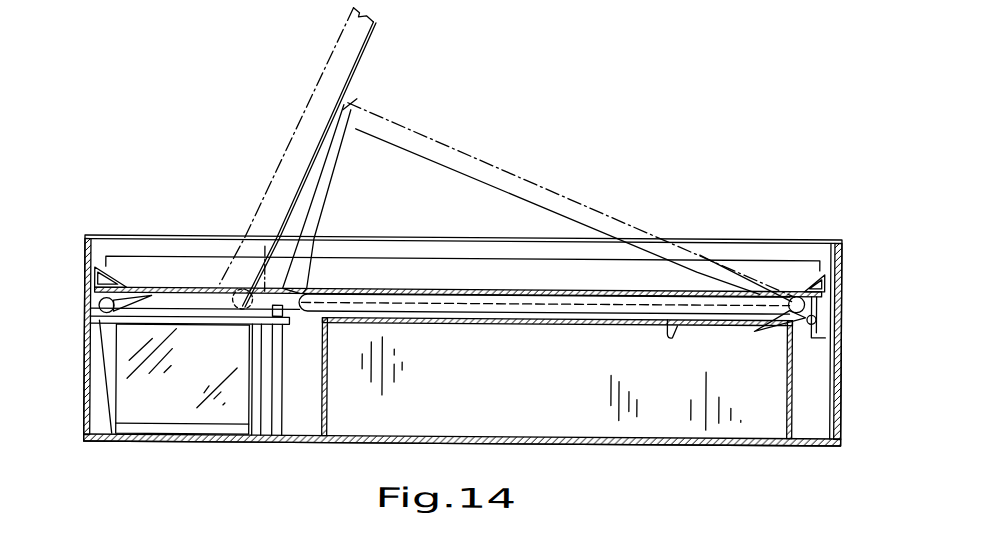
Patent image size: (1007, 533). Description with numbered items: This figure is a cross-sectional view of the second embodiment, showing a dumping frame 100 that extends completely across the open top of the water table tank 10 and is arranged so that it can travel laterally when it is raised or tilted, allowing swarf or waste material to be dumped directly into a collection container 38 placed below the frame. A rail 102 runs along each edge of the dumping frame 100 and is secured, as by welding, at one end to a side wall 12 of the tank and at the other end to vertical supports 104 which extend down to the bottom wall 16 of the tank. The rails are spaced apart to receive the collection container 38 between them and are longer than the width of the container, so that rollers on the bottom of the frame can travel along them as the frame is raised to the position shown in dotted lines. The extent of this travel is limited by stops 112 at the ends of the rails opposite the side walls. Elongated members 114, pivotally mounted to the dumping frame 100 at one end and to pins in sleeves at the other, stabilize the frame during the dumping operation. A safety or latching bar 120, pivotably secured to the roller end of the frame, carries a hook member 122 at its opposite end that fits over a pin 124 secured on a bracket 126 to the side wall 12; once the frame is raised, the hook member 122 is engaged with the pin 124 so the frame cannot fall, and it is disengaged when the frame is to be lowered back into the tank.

The water table tank 10 is at (845, 402).
The side wall 12 is at (84, 330).
The bottom wall 16 is at (569, 443).
The collection container 38 is at (253, 412).
The dumping frame 100 is at (351, 71).
The rail 102 is at (167, 316).
The vertical supports 104 is at (289, 413).
The stops 112 is at (295, 247).
The elongated members 114 is at (527, 177).
The safety or latching bar 120 is at (614, 315).
The hook member 122 is at (826, 284).
The pin 124 is at (822, 340).
The bracket 126 is at (779, 332).